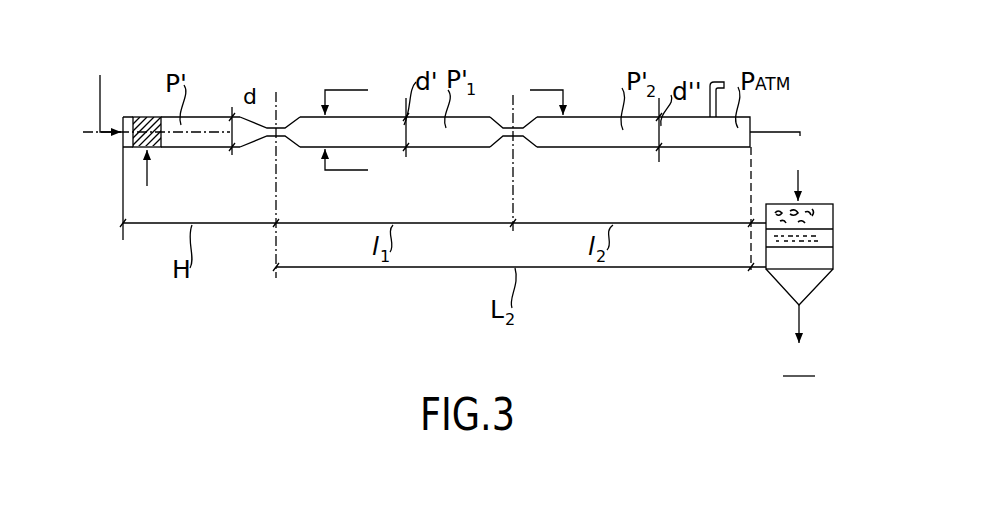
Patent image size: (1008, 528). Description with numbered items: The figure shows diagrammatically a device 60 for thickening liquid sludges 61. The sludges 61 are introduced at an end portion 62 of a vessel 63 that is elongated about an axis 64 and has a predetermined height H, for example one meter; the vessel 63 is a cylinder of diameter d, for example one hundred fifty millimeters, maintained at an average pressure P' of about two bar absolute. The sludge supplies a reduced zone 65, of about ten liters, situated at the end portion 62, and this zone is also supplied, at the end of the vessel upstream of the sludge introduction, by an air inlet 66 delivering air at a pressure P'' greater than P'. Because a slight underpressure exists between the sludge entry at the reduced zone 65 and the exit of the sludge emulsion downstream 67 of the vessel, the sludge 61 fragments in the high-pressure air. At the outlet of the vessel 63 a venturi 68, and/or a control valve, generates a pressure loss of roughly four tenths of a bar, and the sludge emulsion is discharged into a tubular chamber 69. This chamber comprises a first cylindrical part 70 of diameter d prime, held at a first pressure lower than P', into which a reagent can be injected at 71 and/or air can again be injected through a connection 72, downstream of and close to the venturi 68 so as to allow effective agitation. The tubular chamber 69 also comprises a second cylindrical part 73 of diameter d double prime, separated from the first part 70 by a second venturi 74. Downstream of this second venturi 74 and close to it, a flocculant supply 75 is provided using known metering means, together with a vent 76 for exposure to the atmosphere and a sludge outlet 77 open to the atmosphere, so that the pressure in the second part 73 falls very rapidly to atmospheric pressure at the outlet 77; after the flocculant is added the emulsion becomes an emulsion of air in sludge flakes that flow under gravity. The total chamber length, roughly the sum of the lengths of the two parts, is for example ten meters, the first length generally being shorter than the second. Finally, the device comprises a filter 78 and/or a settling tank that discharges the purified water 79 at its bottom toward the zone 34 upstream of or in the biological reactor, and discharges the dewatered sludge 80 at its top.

The device for thickening liquid sludges 60 is at (384, 110).
The liquid sludges 61 is at (147, 186).
The end portion 62 is at (141, 113).
The vessel 63 is at (233, 114).
The axis 64 is at (88, 135).
The reduced zone 65 is at (160, 141).
The air inlet 66 is at (99, 100).
The downstream exit of the vessel 67 is at (284, 150).
The venturi 68 is at (288, 116).
The tubular chamber 69 is at (445, 154).
The first cylindrical part 70 is at (489, 114).
The reagent injection 71 is at (368, 172).
The air connection 72 is at (368, 88).
The second cylindrical part 73 is at (577, 115).
The second venturi 74 is at (521, 139).
The flocculant supply 75 is at (563, 88).
The vent 76 is at (706, 100).
The sludge outlet 77 is at (754, 126).
The filter 78 is at (766, 204).
The purified water 79 is at (799, 316).
The dewatered sludge 80 is at (816, 204).
The zone upstream of or in the biological reactor 34 is at (799, 364).